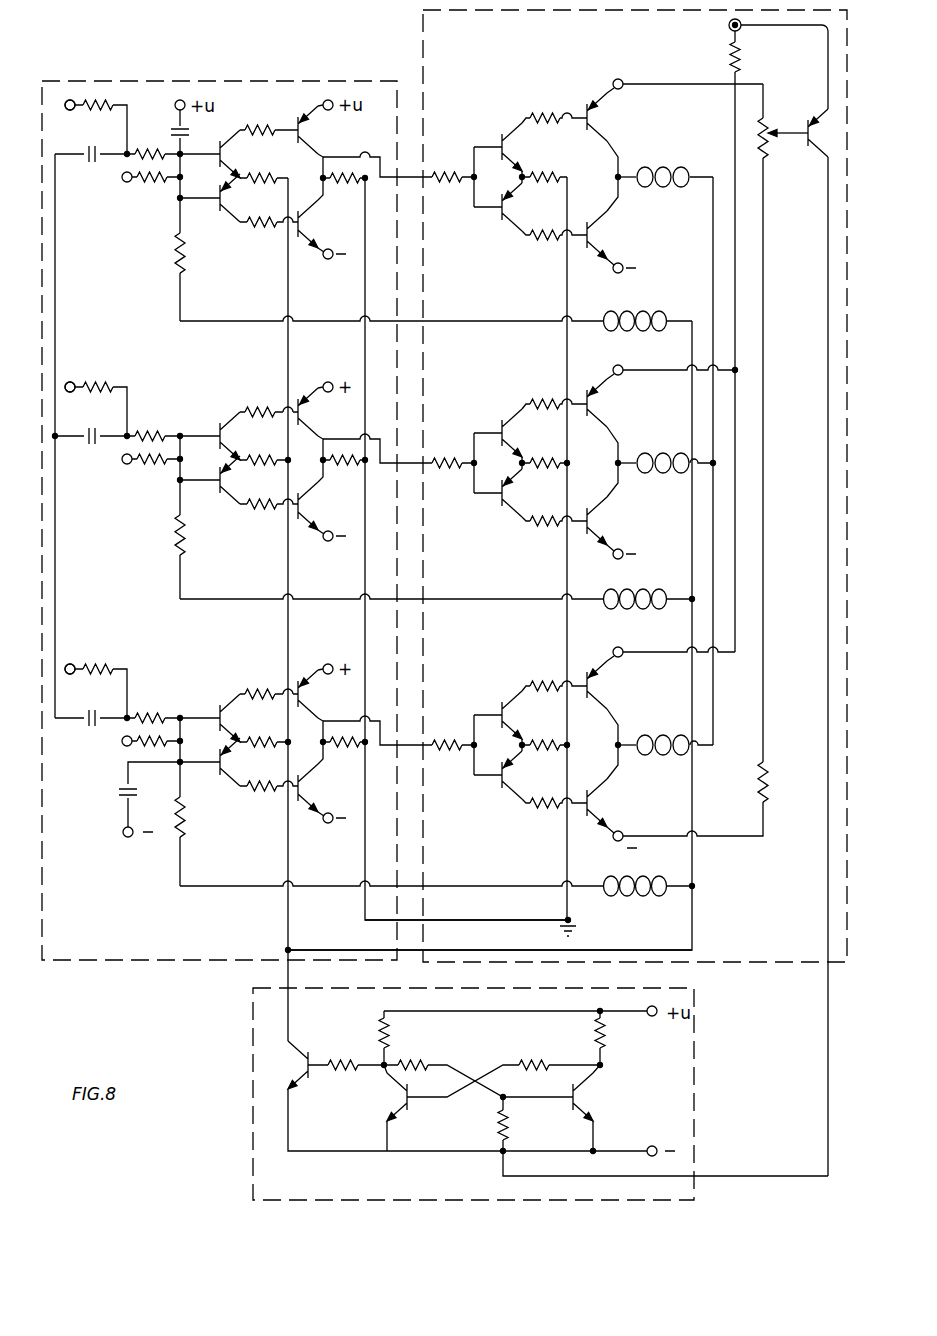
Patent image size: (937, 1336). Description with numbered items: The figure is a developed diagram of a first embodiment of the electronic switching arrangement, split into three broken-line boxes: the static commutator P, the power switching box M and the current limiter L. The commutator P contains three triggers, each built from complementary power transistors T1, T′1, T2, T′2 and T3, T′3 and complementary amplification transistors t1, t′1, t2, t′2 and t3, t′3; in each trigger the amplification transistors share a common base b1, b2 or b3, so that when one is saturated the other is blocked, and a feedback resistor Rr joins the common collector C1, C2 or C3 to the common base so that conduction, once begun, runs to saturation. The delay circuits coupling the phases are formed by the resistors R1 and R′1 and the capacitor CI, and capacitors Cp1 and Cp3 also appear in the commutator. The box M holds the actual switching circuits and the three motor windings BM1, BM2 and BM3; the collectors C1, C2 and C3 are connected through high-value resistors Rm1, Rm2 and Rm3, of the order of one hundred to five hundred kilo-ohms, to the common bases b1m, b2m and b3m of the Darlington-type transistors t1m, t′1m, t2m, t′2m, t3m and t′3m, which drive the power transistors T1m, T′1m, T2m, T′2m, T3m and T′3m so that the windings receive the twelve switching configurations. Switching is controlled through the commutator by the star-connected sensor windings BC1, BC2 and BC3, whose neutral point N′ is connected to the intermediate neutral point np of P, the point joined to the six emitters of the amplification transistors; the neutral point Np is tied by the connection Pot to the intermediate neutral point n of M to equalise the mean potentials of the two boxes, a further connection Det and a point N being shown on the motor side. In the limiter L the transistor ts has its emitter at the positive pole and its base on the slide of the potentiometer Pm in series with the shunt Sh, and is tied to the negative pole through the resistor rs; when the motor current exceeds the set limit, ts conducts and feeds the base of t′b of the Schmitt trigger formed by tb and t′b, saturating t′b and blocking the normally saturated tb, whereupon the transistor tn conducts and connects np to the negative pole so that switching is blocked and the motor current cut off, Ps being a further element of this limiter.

The static commutator box P is at (118, 938).
The motor switching box M is at (718, 945).
The current limiter box L is at (677, 1093).
The delay circuit resistor R1 is at (96, 399).
The delay circuit series resistor R′1 is at (150, 425).
The feedback resistor Rr is at (152, 472).
The delay circuit capacitor CI is at (80, 449).
The common collector C1 is at (193, 293).
The common collector C2 is at (192, 576).
The common collector C3 is at (187, 427).
The capacitor Cp1 is at (200, 132).
The capacitor Cp3 is at (132, 799).
The common base b1 is at (194, 179).
The common base b2 is at (194, 461).
The common base b3 is at (194, 743).
The amplification transistor t1 is at (236, 154).
The amplification transistor t2 is at (236, 436).
The amplification transistor t3 is at (236, 718).
The complementary amplification transistor t′1 is at (237, 198).
The complementary amplification transistor t′2 is at (237, 480).
The complementary amplification transistor t′3 is at (237, 762).
The power transistor T1 is at (319, 139).
The power transistor T2 is at (319, 421).
The power transistor T3 is at (319, 703).
The complementary power transistor T′1 is at (322, 218).
The complementary power transistor T′2 is at (322, 500).
The complementary power transistor T′3 is at (322, 782).
The intermediate neutral point of commutator np is at (263, 285).
The neutral point of commutator Np is at (344, 285).
The connecting resistor Rm1 is at (450, 166).
The connecting resistor Rm2 is at (450, 452).
The connecting resistor Rm3 is at (450, 734).
The common base of M b1m is at (494, 183).
The common base of M b2m is at (494, 469).
The common base of M b3m is at (494, 751).
The Darlington transistor t1m is at (527, 147).
The Darlington transistor t2m is at (527, 433).
The Darlington transistor t3m is at (527, 715).
The complementary Darlington transistor t′1m is at (528, 207).
The complementary Darlington transistor t′2m is at (528, 493).
The complementary Darlington transistor t′3m is at (528, 775).
The motor power transistor T1m is at (616, 128).
The motor power transistor T2m is at (616, 414).
The motor power transistor T3m is at (616, 696).
The complementary motor power transistor T′1m is at (617, 225).
The complementary motor power transistor T′2m is at (617, 511).
The complementary motor power transistor T′3m is at (617, 796).
The motor winding BM1 is at (653, 169).
The motor winding BM2 is at (653, 455).
The motor winding BM3 is at (653, 737).
The sensor winding BC1 is at (635, 334).
The sensor winding BC2 is at (635, 612).
The sensor winding BC3 is at (635, 899).
The intermediate neutral point of M n is at (543, 287).
The node N is at (688, 287).
The sensor neutral point N′ is at (673, 517).
The shunt Sh is at (750, 57).
The detecting transistor ts is at (798, 121).
The potentiometer Pm is at (778, 126).
The resistor rs is at (747, 782).
The potential connection Pot is at (466, 910).
The detector line Det is at (490, 940).
The neutral-point transistor tn is at (294, 1065).
The Schmitt trigger transistor tb is at (394, 1097).
The Schmitt trigger transistor t′b is at (589, 1097).
The resistor Ps is at (490, 1125).